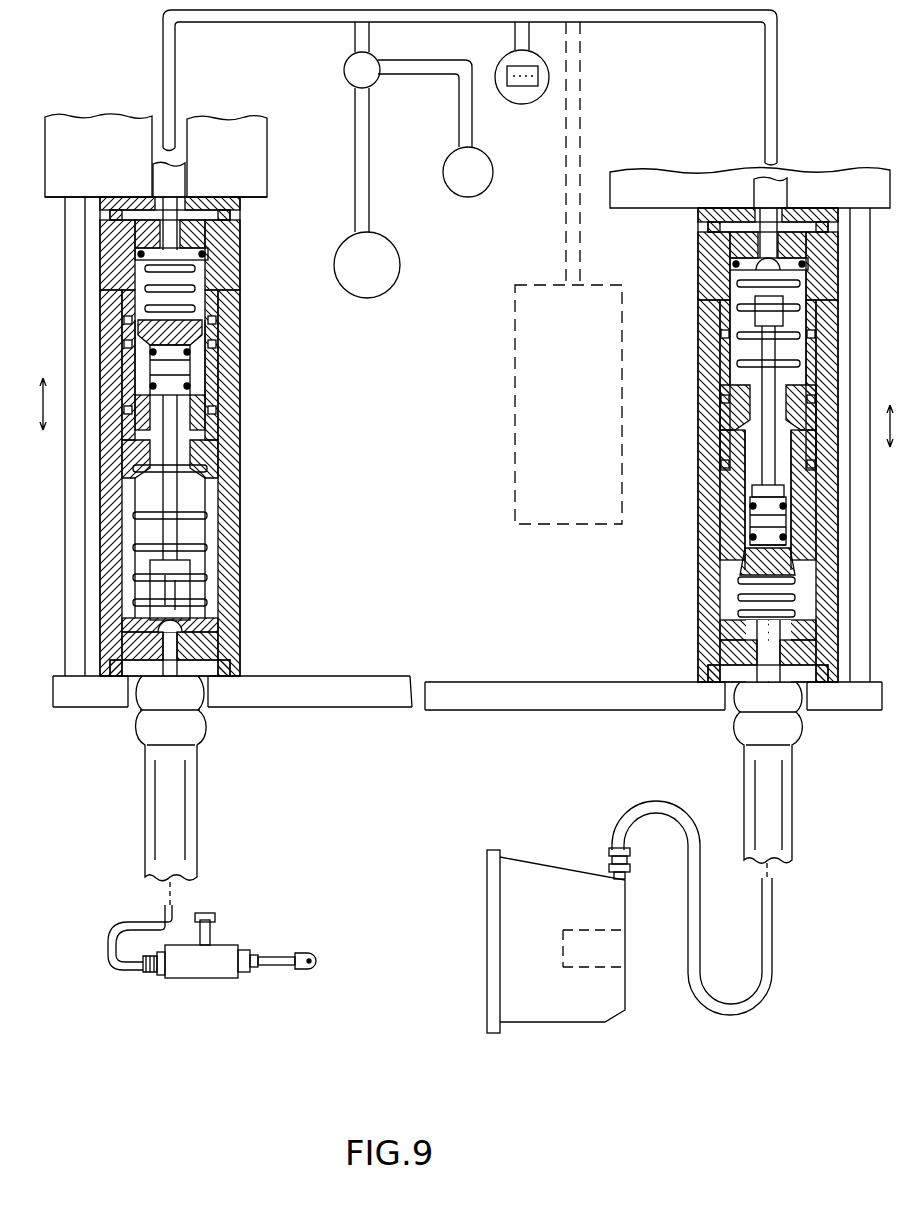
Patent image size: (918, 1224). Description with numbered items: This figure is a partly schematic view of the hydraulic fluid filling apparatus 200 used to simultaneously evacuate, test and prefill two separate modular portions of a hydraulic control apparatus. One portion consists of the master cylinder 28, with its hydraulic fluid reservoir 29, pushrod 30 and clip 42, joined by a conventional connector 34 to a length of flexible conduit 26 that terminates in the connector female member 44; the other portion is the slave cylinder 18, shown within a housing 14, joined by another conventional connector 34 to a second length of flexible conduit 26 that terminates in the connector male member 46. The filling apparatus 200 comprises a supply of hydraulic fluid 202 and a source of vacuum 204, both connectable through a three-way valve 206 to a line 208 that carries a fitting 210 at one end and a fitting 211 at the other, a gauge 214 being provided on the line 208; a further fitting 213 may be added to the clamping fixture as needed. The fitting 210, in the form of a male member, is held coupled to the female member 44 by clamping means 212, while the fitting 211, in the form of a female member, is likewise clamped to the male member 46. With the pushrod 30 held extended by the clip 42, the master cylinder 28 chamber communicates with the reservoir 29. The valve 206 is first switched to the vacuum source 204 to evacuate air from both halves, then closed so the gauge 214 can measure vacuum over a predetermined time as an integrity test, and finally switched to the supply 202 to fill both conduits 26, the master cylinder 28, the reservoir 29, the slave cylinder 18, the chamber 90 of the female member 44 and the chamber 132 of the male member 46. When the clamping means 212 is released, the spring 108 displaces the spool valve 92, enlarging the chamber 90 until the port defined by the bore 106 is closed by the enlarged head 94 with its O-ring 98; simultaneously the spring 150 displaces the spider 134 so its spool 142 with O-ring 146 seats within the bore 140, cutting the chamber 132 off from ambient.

The container 14 is at (592, 879).
The slave cylinder 18 is at (607, 974).
The flexible conduit 26 is at (198, 826).
The master cylinder 28 is at (237, 966).
The hydraulic fluid reservoir 29 is at (206, 937).
The pushrod 30 is at (283, 956).
The conventional connector 34 is at (147, 965).
The clip 42 is at (265, 952).
The connector female member 44 is at (240, 485).
The connector male member 46 is at (239, 263).
The fluid chamber 90 is at (205, 562).
The spool valve 92 is at (155, 480).
The enlarged head 94 is at (186, 396).
The O-ring 98 is at (186, 381).
The bore 106 is at (155, 470).
The spring 108 is at (205, 601).
The chamber 132 is at (745, 477).
The spider 134 is at (820, 560).
The bore 140 is at (750, 443).
The spool 142 is at (755, 519).
The O-ring 146 is at (752, 536).
The spring 150 is at (796, 600).
The hydraulic fluid filling apparatus 200 is at (334, 132).
The supply of hydraulic fluid 202 is at (378, 288).
The source of vacuum 204 is at (472, 192).
The three-way valve 206 is at (383, 65).
The line 208 is at (274, 18).
The fitting 210 is at (239, 234).
The fitting 211 is at (840, 284).
The clamping means 212 is at (64, 333).
The fitting 213 is at (515, 450).
The gauge 214 is at (521, 104).